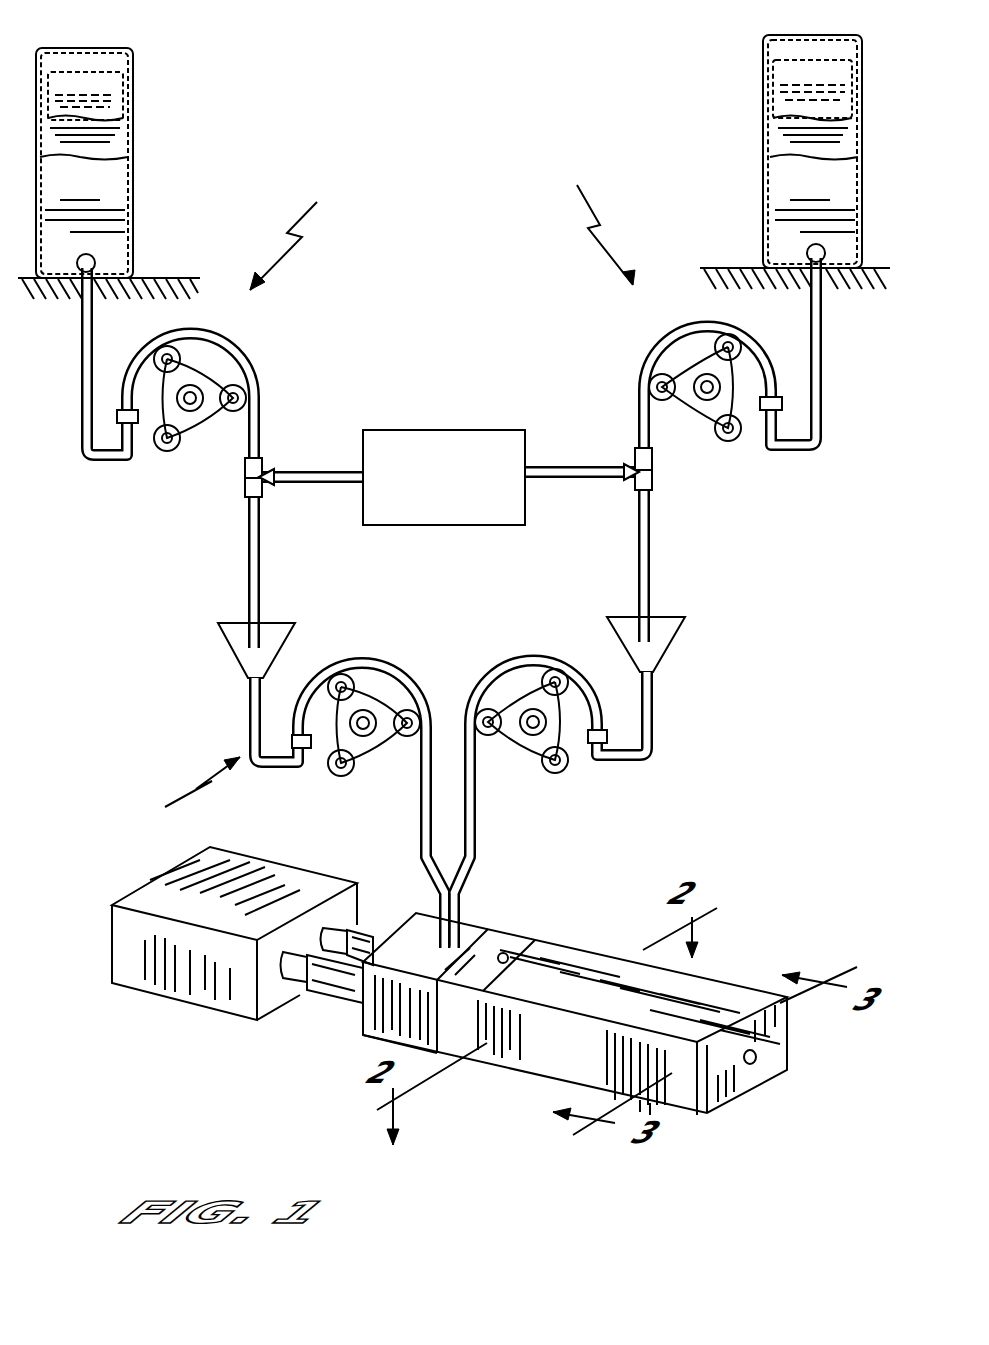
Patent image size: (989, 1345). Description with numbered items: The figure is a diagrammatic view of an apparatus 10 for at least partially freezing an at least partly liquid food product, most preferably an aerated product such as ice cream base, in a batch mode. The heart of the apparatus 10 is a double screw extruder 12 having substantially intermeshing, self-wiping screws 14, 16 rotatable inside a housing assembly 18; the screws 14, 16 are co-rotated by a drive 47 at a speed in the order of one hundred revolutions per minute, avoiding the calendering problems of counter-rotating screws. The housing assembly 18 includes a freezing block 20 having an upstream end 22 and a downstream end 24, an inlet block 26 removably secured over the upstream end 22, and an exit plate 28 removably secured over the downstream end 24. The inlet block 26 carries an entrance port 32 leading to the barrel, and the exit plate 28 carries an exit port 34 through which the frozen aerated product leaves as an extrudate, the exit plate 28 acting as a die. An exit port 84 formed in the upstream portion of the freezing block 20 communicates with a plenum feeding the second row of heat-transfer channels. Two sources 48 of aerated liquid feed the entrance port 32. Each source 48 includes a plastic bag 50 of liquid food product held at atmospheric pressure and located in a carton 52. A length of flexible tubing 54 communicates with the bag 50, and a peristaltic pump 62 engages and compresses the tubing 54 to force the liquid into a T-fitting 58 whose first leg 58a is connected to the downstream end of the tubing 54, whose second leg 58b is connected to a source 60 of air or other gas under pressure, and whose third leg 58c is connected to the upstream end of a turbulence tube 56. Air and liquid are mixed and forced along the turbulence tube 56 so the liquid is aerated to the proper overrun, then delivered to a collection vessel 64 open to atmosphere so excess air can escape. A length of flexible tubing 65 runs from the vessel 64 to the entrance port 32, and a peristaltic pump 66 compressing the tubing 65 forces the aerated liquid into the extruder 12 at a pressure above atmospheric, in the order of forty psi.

The apparatus 10 is at (185, 792).
The double screw extruder 12 is at (556, 993).
The screw 14 is at (347, 990).
The screw 16 is at (377, 933).
The housing assembly 18 is at (603, 1033).
The freezing block 20 is at (523, 1075).
The upstream end 22 is at (427, 1007).
The downstream end 24 is at (683, 1095).
The inlet block 26 is at (363, 1003).
The exit plate 28 is at (723, 1087).
The entrance port 32 is at (482, 920).
The exit port 34 is at (758, 1055).
The drive 47 is at (160, 973).
The source 48 is at (442, 222).
The plastic bag 50 is at (110, 142).
The carton 52 is at (135, 193).
The flexible tubing 54 is at (115, 458).
The turbulence tube 56 is at (250, 575).
The T-fitting 58 is at (460, 468).
The first leg 58a is at (245, 466).
The second leg 58b is at (267, 485).
The third leg 58c is at (243, 493).
The source of air or other gas under pressure 60 is at (443, 428).
The peristaltic pump 62 is at (207, 373).
The collection vessel 64 is at (230, 655).
The flexible tubing 65 is at (372, 660).
The peristaltic pump 66 is at (378, 745).
The exit port 84 is at (510, 953).